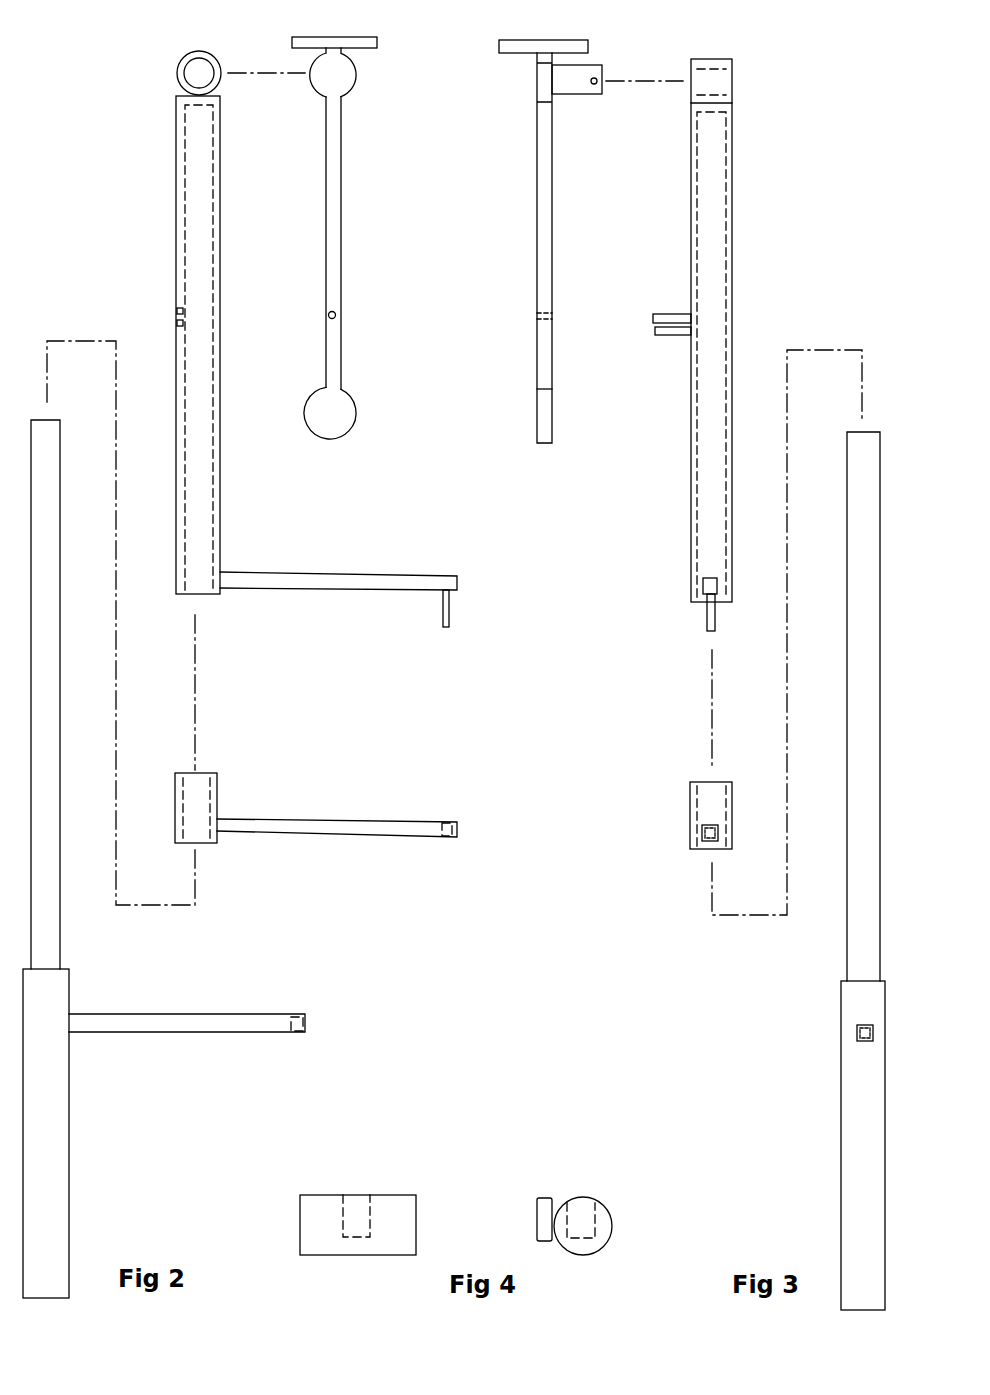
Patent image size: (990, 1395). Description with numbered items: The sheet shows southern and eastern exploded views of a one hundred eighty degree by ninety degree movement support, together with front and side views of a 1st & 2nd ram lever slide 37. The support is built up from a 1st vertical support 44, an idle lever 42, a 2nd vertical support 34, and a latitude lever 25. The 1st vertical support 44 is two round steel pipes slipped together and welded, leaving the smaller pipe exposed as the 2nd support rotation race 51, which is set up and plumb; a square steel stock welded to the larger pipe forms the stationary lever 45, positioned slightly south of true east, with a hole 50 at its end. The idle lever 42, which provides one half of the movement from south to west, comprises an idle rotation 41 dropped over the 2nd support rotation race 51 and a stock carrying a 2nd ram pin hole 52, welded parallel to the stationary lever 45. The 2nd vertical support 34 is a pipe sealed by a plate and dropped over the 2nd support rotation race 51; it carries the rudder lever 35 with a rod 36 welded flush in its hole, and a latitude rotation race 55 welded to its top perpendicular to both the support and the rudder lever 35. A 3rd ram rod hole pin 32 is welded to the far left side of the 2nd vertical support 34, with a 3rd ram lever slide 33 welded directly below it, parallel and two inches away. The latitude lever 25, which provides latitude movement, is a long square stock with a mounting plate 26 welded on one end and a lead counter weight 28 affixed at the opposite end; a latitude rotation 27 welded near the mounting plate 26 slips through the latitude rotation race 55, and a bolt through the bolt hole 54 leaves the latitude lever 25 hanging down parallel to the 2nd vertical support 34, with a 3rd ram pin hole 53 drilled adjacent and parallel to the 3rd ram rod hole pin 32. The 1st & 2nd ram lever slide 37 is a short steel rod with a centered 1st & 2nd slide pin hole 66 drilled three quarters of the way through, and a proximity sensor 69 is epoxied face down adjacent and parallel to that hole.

In FIG. 2, the latitude lever 25 is at (334, 156).
In FIG. 3, the latitude lever 25 is at (543, 157).
In FIG. 2, the mounting plate 26 is at (293, 38).
In FIG. 3, the mounting plate 26 is at (582, 47).
In FIG. 2, the latitude rotation 27 is at (343, 78).
In FIG. 3, the latitude rotation 27 is at (572, 85).
In FIG. 2, the lead counter weight 28 is at (342, 420).
In FIG. 3, the lead counter weight 28 is at (540, 435).
In FIG. 2, the 3rd ram rod hole pin 32 is at (178, 310).
In FIG. 3, the 3rd ram rod hole pin 32 is at (672, 317).
In FIG. 2, the 3rd ram lever slide 33 is at (177, 322).
In FIG. 3, the 3rd ram lever slide 33 is at (662, 331).
In FIG. 2, the 2nd vertical support 34 is at (214, 485).
In FIG. 3, the 2nd vertical support 34 is at (693, 473).
In FIG. 2, the rudder lever 35 is at (312, 578).
In FIG. 3, the rudder lever 35 is at (700, 586).
In FIG. 2, the arm peg 36 is at (443, 612).
In FIG. 3, the arm peg 36 is at (707, 622).
In FIG. 4, the 1st & 2nd ram lever slide 37 is at (310, 1215).
In FIG. 2, the idle rotation 41 is at (215, 787).
In FIG. 3, the idle rotation 41 is at (690, 786).
In FIG. 2, the idle lever 42 is at (293, 825).
In FIG. 3, the idle lever 42 is at (703, 833).
In FIG. 2, the 1st vertical support 44 is at (60, 1087).
In FIG. 3, the 1st vertical support 44 is at (855, 1093).
In FIG. 2, the stationary lever 45 is at (140, 1020).
In FIG. 3, the stationary lever 45 is at (857, 1033).
In FIG. 2, the lower arm end fitting 50 is at (293, 1015).
In FIG. 3, the lower arm end fitting 50 is at (860, 1027).
In FIG. 2, the 2nd support rotation race 51 is at (55, 950).
In FIG. 3, the 2nd support rotation race 51 is at (858, 953).
In FIG. 2, the 2nd ram pin hole 52 is at (447, 822).
In FIG. 3, the 2nd ram pin hole 52 is at (705, 826).
In FIG. 2, the 3rd ram pin hole 53 is at (337, 315).
In FIG. 3, the 3rd ram pin hole 53 is at (537, 317).
In FIG. 3, the bolt hole 54 is at (602, 81).
In FIG. 2, the latitude rotation race 55 is at (177, 75).
In FIG. 3, the latitude rotation race 55 is at (725, 63).
In FIG. 4, the 1st & 2nd slide pin hole 66 is at (357, 1203).
In FIG. 4, the proximity sensor 69 is at (540, 1213).